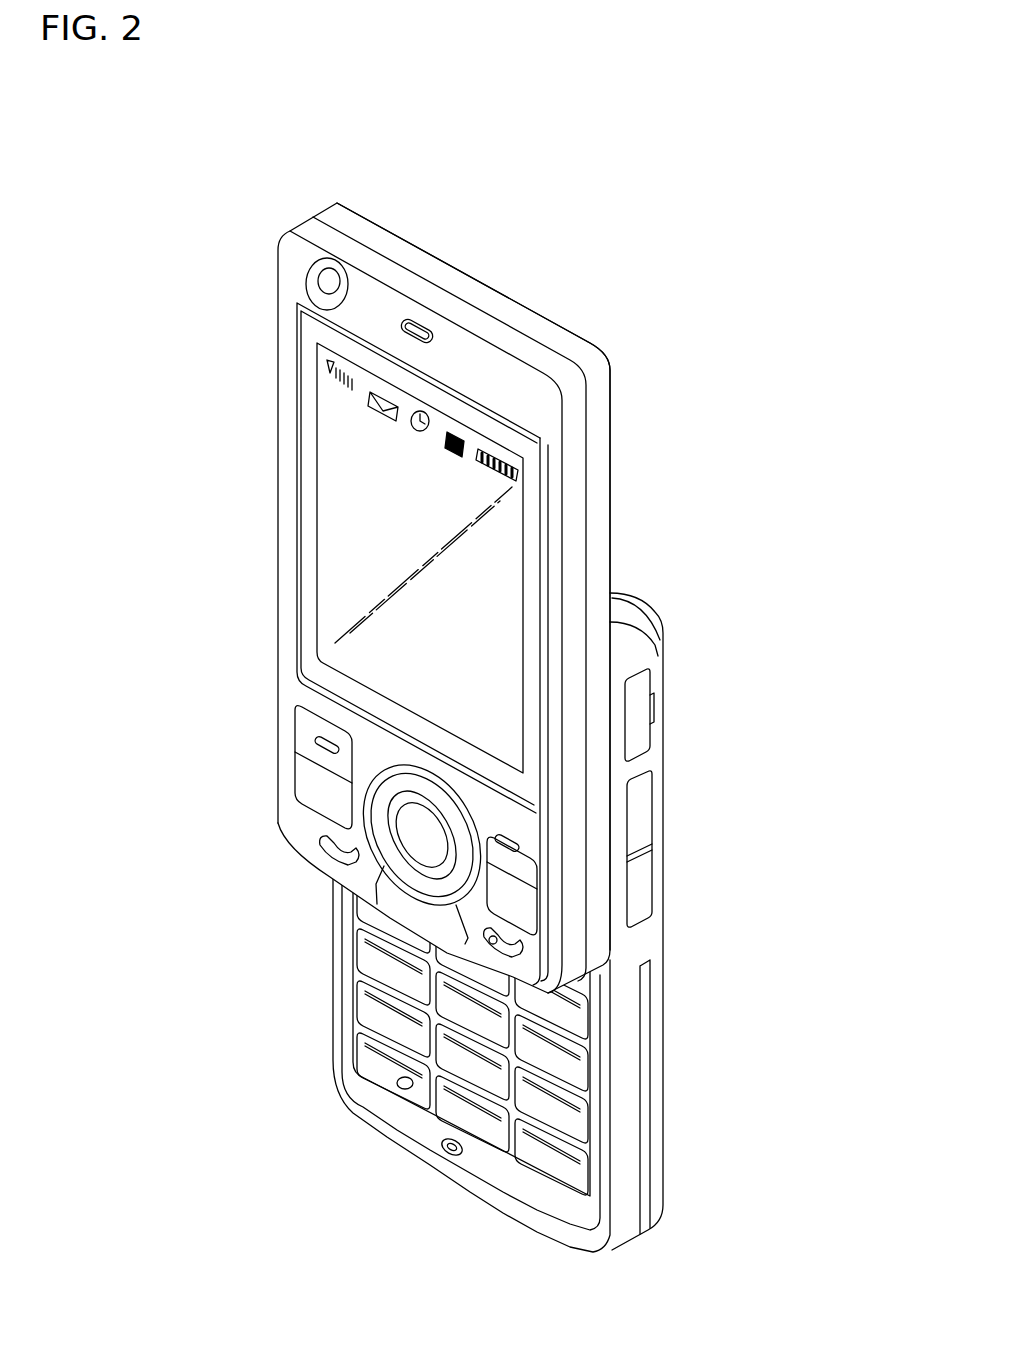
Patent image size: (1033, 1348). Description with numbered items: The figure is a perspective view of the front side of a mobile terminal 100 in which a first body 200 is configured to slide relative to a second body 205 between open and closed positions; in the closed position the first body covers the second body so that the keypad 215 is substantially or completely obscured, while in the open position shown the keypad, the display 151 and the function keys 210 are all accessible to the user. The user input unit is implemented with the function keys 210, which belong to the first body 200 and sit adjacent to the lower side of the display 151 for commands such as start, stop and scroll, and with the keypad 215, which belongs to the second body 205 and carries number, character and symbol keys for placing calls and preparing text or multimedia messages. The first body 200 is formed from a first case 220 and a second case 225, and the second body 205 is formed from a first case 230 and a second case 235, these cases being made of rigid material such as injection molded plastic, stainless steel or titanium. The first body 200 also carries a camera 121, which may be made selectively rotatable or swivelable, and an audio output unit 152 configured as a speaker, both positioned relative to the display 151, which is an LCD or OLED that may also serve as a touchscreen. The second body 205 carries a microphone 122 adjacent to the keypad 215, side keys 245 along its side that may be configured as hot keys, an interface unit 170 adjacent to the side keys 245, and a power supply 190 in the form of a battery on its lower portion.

The mobile terminal 100 is at (650, 240).
The camera 121 is at (330, 284).
The microphone 122 is at (450, 1158).
The display 151 is at (337, 494).
The audio output unit 152 is at (418, 330).
The interface unit 170 is at (640, 708).
The power supply 190 is at (655, 1055).
The first body 200 is at (235, 379).
The second body 205 is at (322, 973).
The function keys 210 is at (313, 778).
The keypad 215 is at (365, 1043).
The first case 220 is at (575, 478).
The second case 225 is at (597, 430).
The first case 230 is at (622, 638).
The second case 235 is at (652, 668).
The side keys 245 is at (647, 878).